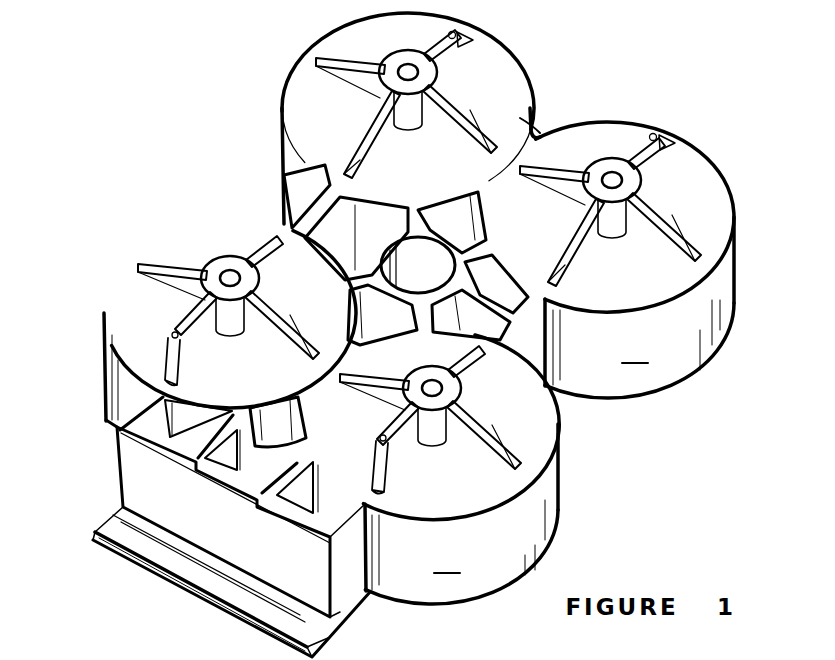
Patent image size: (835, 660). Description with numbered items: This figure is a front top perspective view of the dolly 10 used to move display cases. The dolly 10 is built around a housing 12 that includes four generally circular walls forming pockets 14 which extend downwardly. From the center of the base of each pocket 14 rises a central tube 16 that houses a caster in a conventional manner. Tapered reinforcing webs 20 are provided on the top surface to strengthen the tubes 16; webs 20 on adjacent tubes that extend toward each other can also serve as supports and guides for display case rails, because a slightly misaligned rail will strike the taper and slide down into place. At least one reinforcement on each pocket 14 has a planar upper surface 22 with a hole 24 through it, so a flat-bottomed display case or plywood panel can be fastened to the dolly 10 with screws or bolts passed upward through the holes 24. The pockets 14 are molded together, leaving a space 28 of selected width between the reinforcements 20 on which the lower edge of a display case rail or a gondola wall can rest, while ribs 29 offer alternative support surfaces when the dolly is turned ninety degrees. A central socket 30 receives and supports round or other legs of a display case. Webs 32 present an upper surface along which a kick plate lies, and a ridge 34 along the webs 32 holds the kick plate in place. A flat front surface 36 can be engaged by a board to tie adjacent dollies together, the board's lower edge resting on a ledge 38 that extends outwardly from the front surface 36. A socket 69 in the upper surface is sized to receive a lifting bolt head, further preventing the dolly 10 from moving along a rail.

The dolly 10 is at (407, 333).
The housing 12 is at (379, 335).
The pocket 14 is at (419, 308).
The central tube 16 is at (393, 57).
The tapered reinforcing web 20 is at (168, 263).
The upper surface 22 is at (173, 353).
The hole 24 is at (652, 135).
The space 28 is at (512, 158).
The rib 29 is at (517, 322).
The central socket 30 is at (410, 257).
The web 32 is at (352, 560).
The ridge 34 is at (116, 428).
The flat front surface 36 is at (140, 480).
The ledge 38 is at (148, 548).
The socket 69 is at (280, 410).